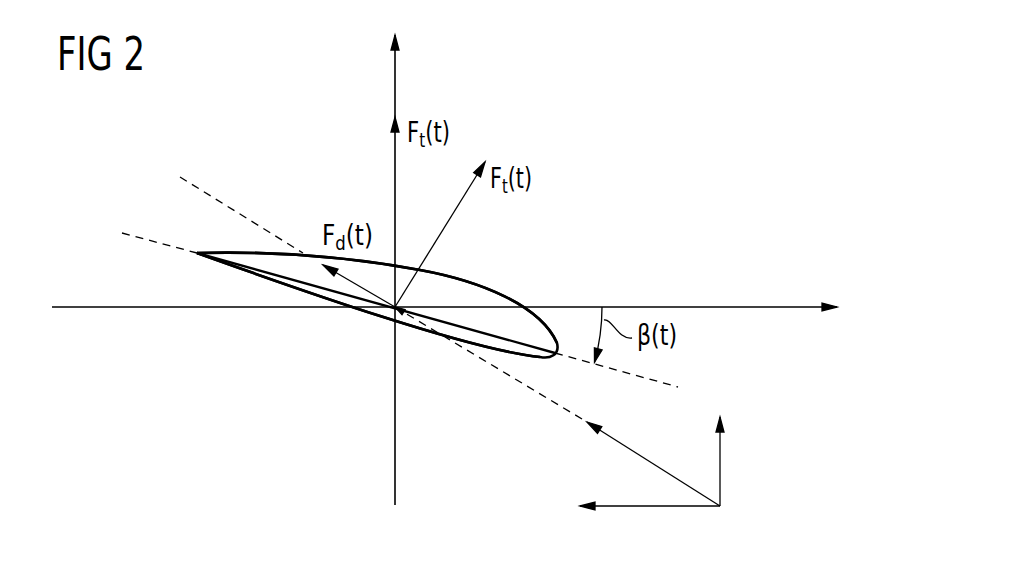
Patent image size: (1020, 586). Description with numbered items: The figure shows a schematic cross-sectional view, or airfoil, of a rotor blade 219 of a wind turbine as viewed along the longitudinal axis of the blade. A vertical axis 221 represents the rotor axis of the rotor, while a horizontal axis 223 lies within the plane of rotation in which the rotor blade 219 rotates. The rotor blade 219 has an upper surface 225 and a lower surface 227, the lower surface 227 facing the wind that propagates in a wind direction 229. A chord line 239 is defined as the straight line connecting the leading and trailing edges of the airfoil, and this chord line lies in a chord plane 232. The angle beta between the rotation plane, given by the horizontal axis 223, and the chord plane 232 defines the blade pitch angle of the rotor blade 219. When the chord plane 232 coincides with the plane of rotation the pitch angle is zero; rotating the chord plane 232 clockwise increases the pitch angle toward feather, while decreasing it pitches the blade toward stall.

The rotor blade 219 is at (452, 293).
The vertical axis 221 is at (396, 81).
The horizontal axis 223 is at (572, 307).
The upper surface 225 is at (495, 295).
The lower surface 227 is at (408, 327).
The wind direction 229 is at (720, 470).
The chord plane 232 is at (678, 387).
The chord line 239 is at (517, 345).